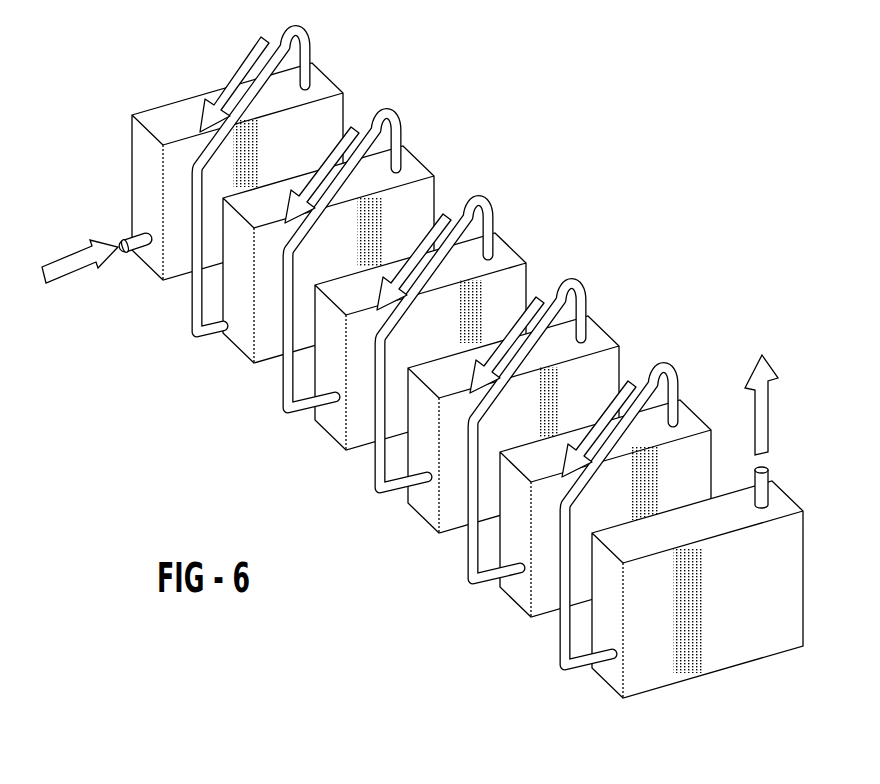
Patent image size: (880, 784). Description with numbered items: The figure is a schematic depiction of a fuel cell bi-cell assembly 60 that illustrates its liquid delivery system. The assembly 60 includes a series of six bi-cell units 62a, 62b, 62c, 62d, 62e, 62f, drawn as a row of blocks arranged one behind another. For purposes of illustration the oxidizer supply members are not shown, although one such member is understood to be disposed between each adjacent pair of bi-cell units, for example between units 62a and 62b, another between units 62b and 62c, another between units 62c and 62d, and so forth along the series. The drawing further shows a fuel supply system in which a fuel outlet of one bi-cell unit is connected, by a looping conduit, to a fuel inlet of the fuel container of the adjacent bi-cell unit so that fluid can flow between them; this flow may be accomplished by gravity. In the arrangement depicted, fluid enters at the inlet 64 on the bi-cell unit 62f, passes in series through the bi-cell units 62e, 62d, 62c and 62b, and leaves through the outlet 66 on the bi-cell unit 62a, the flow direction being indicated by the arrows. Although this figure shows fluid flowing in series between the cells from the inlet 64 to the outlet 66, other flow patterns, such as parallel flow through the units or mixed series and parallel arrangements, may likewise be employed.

The assembly 60 is at (543, 213).
The bi-cell unit 62a is at (647, 675).
The bi-cell unit 62b is at (548, 585).
The bi-cell unit 62c is at (460, 535).
The bi-cell unit 62d is at (364, 423).
The bi-cell unit 62e is at (274, 340).
The bi-cell unit 62f is at (181, 258).
The inlet 64 is at (121, 239).
The outlet 66 is at (768, 478).